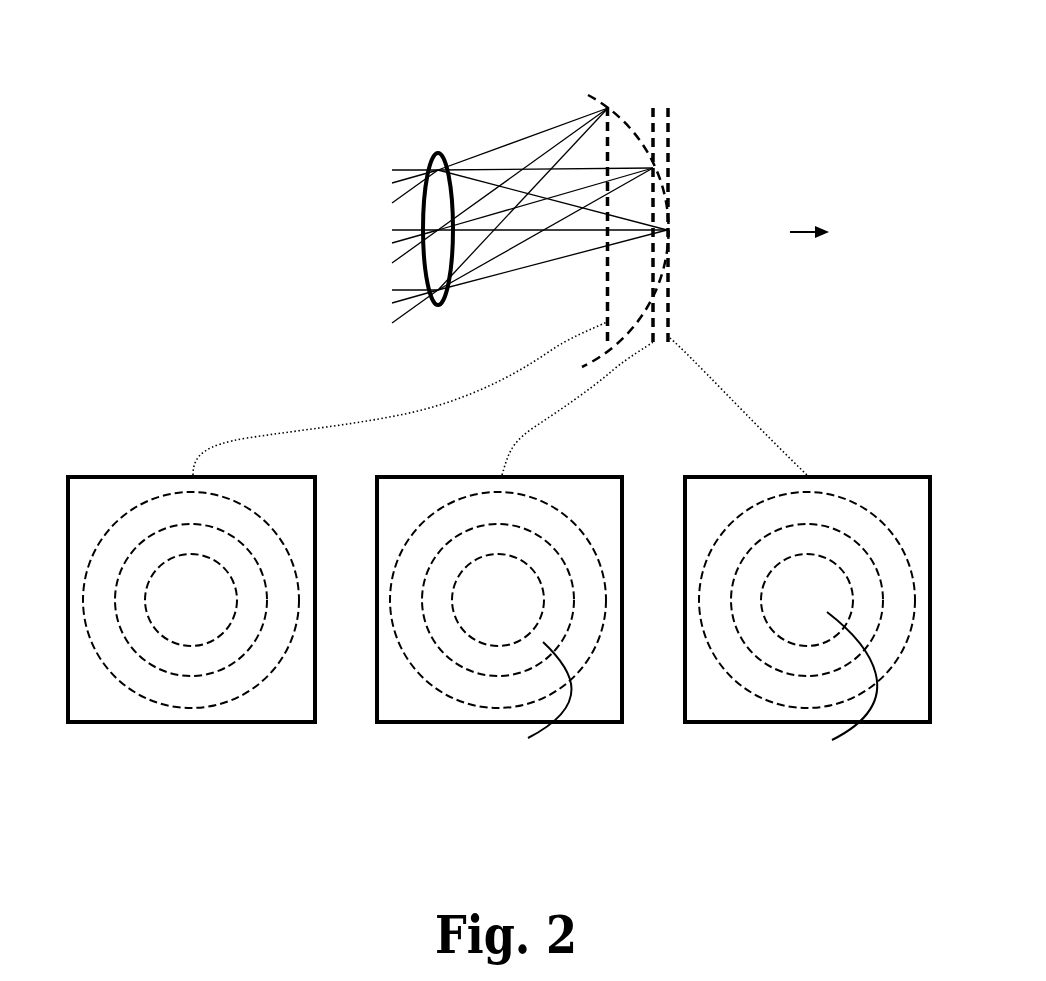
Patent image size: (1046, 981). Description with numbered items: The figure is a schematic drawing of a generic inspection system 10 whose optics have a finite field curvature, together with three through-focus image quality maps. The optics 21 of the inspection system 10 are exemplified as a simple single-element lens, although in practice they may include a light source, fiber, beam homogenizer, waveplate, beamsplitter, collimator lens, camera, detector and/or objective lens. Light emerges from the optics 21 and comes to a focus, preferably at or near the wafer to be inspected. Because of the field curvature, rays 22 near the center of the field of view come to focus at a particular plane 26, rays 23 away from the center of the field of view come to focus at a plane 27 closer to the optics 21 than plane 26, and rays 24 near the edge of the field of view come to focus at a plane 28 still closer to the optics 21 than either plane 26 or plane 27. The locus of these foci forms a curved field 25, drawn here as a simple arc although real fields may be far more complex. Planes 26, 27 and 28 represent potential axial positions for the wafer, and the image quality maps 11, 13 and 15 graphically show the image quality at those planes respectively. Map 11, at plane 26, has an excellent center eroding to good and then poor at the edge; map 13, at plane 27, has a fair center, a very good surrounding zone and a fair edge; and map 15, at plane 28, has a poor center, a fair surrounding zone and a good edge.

The inspection system 10 is at (318, 179).
The image quality map 11 is at (855, 475).
The image quality map 13 is at (545, 475).
The image quality map 15 is at (143, 475).
The optics 21 is at (440, 306).
The rays 22 is at (532, 267).
The rays 23 is at (565, 193).
The rays 24 is at (483, 150).
The curved field 25 is at (593, 97).
The plane 26 is at (670, 139).
The plane 27 is at (653, 118).
The plane 28 is at (608, 137).